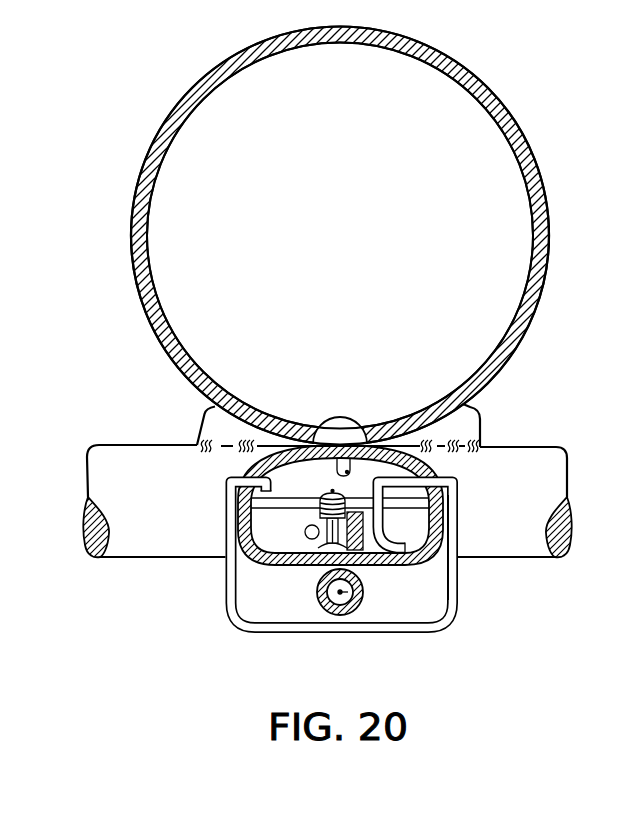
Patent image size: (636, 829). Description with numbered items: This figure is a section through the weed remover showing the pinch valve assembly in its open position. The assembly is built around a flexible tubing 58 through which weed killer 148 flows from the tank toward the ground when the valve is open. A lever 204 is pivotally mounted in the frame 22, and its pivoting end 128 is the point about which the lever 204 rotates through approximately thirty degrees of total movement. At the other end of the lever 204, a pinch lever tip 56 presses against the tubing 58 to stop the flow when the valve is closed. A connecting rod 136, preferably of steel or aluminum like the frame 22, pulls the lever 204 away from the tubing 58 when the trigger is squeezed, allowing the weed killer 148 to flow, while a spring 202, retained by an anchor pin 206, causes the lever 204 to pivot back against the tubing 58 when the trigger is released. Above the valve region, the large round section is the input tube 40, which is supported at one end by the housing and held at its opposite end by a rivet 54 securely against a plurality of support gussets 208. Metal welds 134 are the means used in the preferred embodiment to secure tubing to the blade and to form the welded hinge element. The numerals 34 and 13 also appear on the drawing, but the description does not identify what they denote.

The input tube 40 is at (177, 355).
The support body 34 is at (123, 455).
The support gussets 208 is at (207, 409).
The frame 22 is at (506, 446).
The rivet 54 is at (360, 418).
The metal welds 134 is at (208, 453).
The pivoting end 128 is at (456, 483).
The anchor pin 206 is at (280, 507).
The spring 202 is at (312, 534).
The pinch lever tip 56 is at (343, 630).
The lever 204 is at (458, 545).
The connecting rod 136 is at (392, 566).
The weed killer 148 is at (360, 603).
The flexible tubing 58 is at (317, 594).
The frame 13 is at (624, 614).